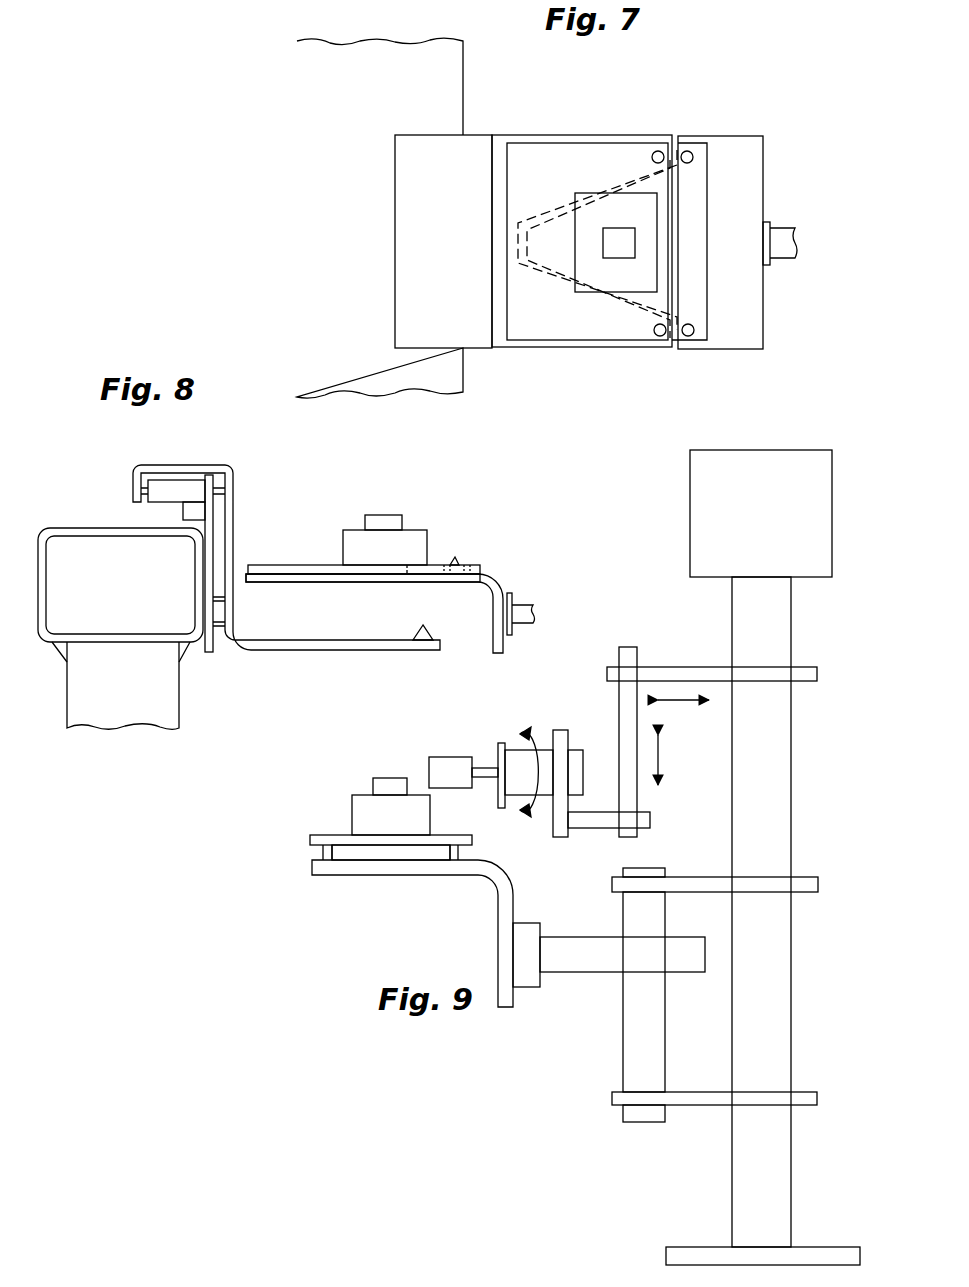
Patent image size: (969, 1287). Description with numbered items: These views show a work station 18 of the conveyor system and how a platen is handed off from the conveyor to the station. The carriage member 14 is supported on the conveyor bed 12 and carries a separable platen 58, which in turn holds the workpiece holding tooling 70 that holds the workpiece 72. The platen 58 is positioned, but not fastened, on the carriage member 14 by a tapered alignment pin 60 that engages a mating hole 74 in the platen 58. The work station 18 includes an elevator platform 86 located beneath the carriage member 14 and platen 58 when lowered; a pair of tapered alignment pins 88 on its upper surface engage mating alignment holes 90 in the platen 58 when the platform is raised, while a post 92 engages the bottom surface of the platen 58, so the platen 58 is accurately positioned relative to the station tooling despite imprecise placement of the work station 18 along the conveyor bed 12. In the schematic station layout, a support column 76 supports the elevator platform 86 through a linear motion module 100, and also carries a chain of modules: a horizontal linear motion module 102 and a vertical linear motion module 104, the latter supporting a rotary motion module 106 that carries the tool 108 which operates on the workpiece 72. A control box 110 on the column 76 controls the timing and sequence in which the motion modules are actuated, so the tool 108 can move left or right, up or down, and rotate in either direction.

In FIG. 7, the conveyor bed 12 is at (294, 173).
In FIG. 8, the conveyor bed 12 is at (91, 526).
In FIG. 7, the carriage member 14 is at (432, 351).
In FIG. 8, the carriage member 14 is at (197, 463).
In FIG. 9, the work station 18 is at (842, 782).
In FIG. 7, the separable platen 58 is at (537, 143).
In FIG. 8, the separable platen 58 is at (298, 565).
In FIG. 9, the separable platen 58 is at (311, 838).
In FIG. 7, the tapered alignment pin 60 is at (663, 248).
In FIG. 8, the tapered alignment pin 60 is at (428, 627).
In FIG. 7, the workpiece holding tooling 70 is at (659, 222).
In FIG. 8, the workpiece holding tooling 70 is at (428, 548).
In FIG. 9, the workpiece holding tooling 70 is at (352, 812).
In FIG. 7, the workpiece 72 is at (617, 228).
In FIG. 8, the workpiece 72 is at (392, 515).
In FIG. 9, the workpiece 72 is at (385, 778).
In FIG. 7, the mating hole 74 is at (656, 150).
In FIG. 8, the mating hole 74 is at (412, 576).
In FIG. 9, the support column 76 is at (791, 945).
In FIG. 7, the elevator platform 86 is at (764, 171).
In FIG. 8, the elevator platform 86 is at (493, 620).
In FIG. 9, the elevator platform 86 is at (373, 878).
In FIG. 7, the tapered alignment pin 88 is at (691, 199).
In FIG. 8, the tapered alignment pin 88 is at (458, 563).
In FIG. 7, the mating alignment hole 90 is at (691, 150).
In FIG. 8, the mating alignment hole 90 is at (472, 569).
In FIG. 8, the post 92 is at (300, 578).
In FIG. 9, the linear motion module 100 is at (623, 1030).
In FIG. 9, the horizontal linear motion module 102 is at (683, 667).
In FIG. 9, the vertical linear motion module 104 is at (619, 707).
In FIG. 9, the rotary motion module 106 is at (548, 796).
In FIG. 9, the tool 108 is at (447, 757).
In FIG. 9, the control box 110 is at (690, 488).